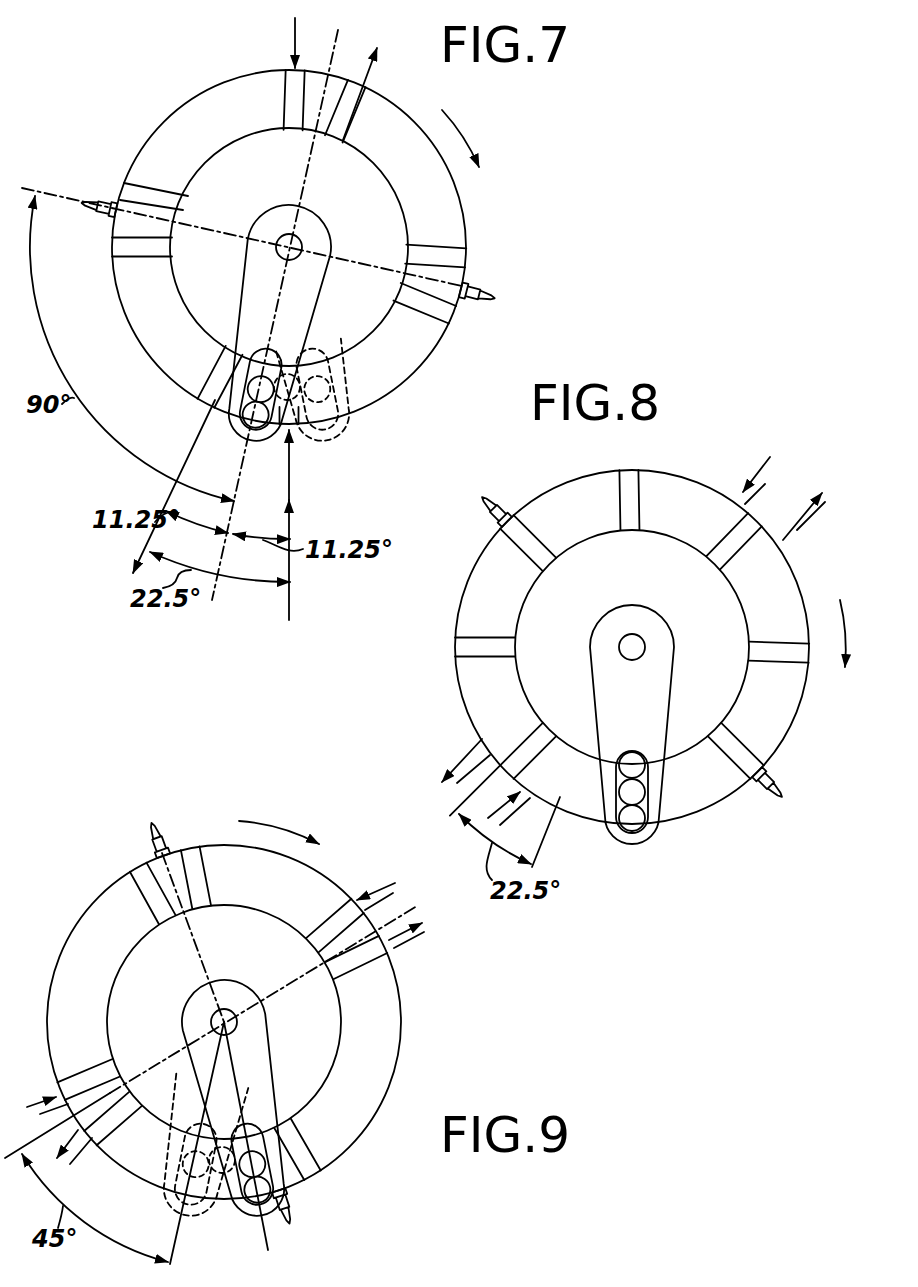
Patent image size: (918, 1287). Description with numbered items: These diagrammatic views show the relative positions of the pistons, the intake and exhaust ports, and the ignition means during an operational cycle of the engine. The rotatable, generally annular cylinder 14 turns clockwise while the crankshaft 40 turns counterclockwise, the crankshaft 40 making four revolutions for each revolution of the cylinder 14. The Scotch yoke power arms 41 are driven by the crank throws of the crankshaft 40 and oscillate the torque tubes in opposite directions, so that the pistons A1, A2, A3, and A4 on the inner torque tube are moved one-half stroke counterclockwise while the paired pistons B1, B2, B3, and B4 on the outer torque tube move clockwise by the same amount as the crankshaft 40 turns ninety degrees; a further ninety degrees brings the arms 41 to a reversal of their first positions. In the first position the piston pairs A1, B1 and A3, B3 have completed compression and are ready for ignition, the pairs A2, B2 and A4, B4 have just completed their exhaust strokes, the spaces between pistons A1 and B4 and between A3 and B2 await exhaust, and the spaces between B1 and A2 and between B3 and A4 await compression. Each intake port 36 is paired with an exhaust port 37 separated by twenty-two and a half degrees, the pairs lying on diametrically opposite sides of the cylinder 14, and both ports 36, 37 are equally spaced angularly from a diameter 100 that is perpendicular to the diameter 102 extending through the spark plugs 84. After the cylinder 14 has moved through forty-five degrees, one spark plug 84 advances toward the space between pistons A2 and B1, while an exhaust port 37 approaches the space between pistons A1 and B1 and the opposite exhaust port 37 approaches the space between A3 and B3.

In FIG. 7, the cylinder 14 is at (188, 102).
In FIG. 8, the cylinder 14 is at (578, 477).
In FIG. 9, the cylinder 14 is at (400, 1040).
In FIG. 7, the intake ports 36 is at (287, 50).
In FIG. 8, the intake ports 36 is at (740, 487).
In FIG. 9, the intake ports 36 is at (370, 891).
In FIG. 7, the exhaust ports 37 is at (379, 64).
In FIG. 8, the exhaust ports 37 is at (798, 528).
In FIG. 9, the exhaust ports 37 is at (408, 948).
In FIG. 7, the crankshaft 40 is at (250, 376).
In FIG. 8, the crankshaft 40 is at (630, 756).
In FIG. 9, the crankshaft 40 is at (184, 1162).
In FIG. 7, the power arm 41 is at (248, 268).
In FIG. 8, the power arm 41 is at (672, 682).
In FIG. 9, the power arm 41 is at (174, 1072).
In FIG. 7, the spark plugs 84 is at (106, 198).
In FIG. 8, the spark plugs 84 is at (500, 498).
In FIG. 9, the spark plugs 84 is at (168, 842).
In FIG. 7, the diameter 100 is at (314, 186).
In FIG. 9, the diameter 100 is at (298, 979).
In FIG. 7, the diameter 102 is at (218, 228).
In FIG. 9, the diameter 102 is at (194, 932).
In FIG. 7, the piston A1 is at (142, 256).
In FIG. 8, the piston A1 is at (500, 640).
In FIG. 9, the piston A1 is at (85, 1072).
In FIG. 7, the piston A2 is at (285, 97).
In FIG. 8, the piston A2 is at (638, 504).
In FIG. 9, the piston A2 is at (205, 878).
In FIG. 7, the piston A3 is at (432, 246).
In FIG. 8, the piston A3 is at (784, 640).
In FIG. 9, the piston A3 is at (359, 971).
In FIG. 7, the piston A4 is at (310, 440).
In FIG. 7, the piston B1 is at (170, 182).
In FIG. 8, the piston B1 is at (550, 544).
In FIG. 9, the piston B1 is at (142, 902).
In FIG. 7, the piston B2 is at (354, 118).
In FIG. 8, the piston B2 is at (736, 561).
In FIG. 9, the piston B2 is at (326, 925).
In FIG. 7, the piston B3 is at (408, 314).
In FIG. 8, the piston B3 is at (748, 747).
In FIG. 9, the piston B3 is at (304, 1144).
In FIG. 7, the piston B4 is at (218, 378).
In FIG. 8, the piston B4 is at (520, 746).
In FIG. 9, the piston B4 is at (114, 1134).